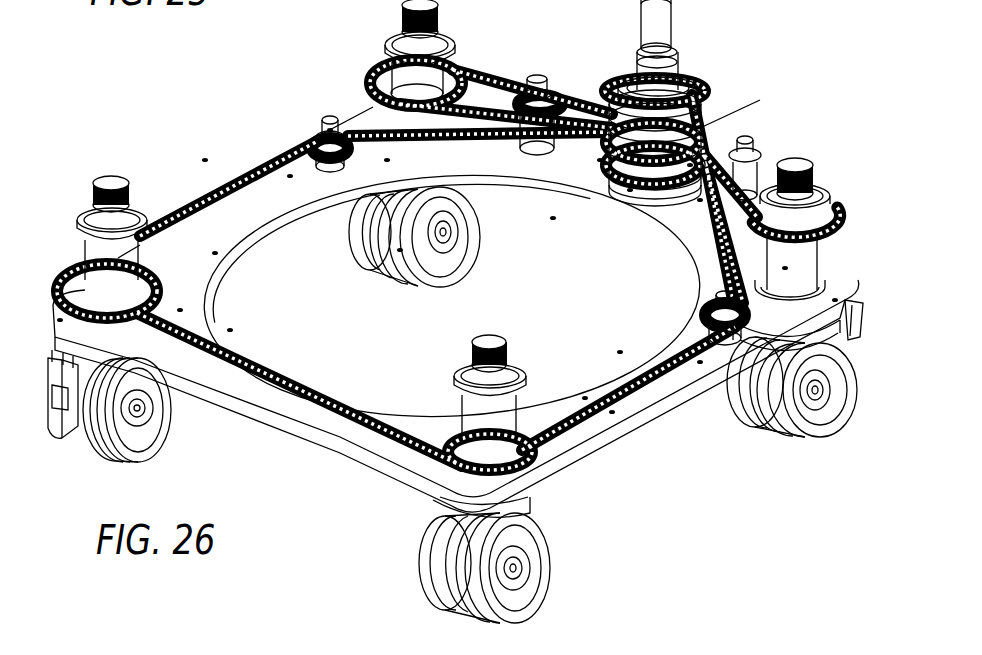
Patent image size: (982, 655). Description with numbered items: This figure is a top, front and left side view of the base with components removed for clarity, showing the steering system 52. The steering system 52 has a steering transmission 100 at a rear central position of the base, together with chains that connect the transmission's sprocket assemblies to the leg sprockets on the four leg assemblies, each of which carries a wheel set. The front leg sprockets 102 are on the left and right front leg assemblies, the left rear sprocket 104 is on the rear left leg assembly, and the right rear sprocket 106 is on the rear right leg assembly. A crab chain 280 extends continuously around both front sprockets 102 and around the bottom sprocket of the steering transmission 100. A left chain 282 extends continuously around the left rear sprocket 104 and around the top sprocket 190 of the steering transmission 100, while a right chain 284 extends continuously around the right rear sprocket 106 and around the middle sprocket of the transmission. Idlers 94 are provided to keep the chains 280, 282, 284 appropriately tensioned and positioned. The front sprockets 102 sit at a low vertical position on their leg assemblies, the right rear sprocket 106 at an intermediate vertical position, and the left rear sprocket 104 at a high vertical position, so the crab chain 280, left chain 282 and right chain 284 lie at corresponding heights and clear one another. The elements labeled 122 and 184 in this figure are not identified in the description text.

The steering system 52 is at (553, 182).
The idlers 94 is at (328, 118).
The steering transmission 100 is at (695, 103).
The front leg sprockets 102 is at (205, 284).
The left rear sprocket 104 is at (832, 206).
The right rear sprocket 106 is at (432, 62).
The corner post 122 is at (106, 180).
The drive shaft 184 is at (676, 26).
The top sprocket 190 is at (684, 93).
The crab chain 280 is at (578, 442).
The left chain 282 is at (723, 124).
The right chain 284 is at (581, 96).